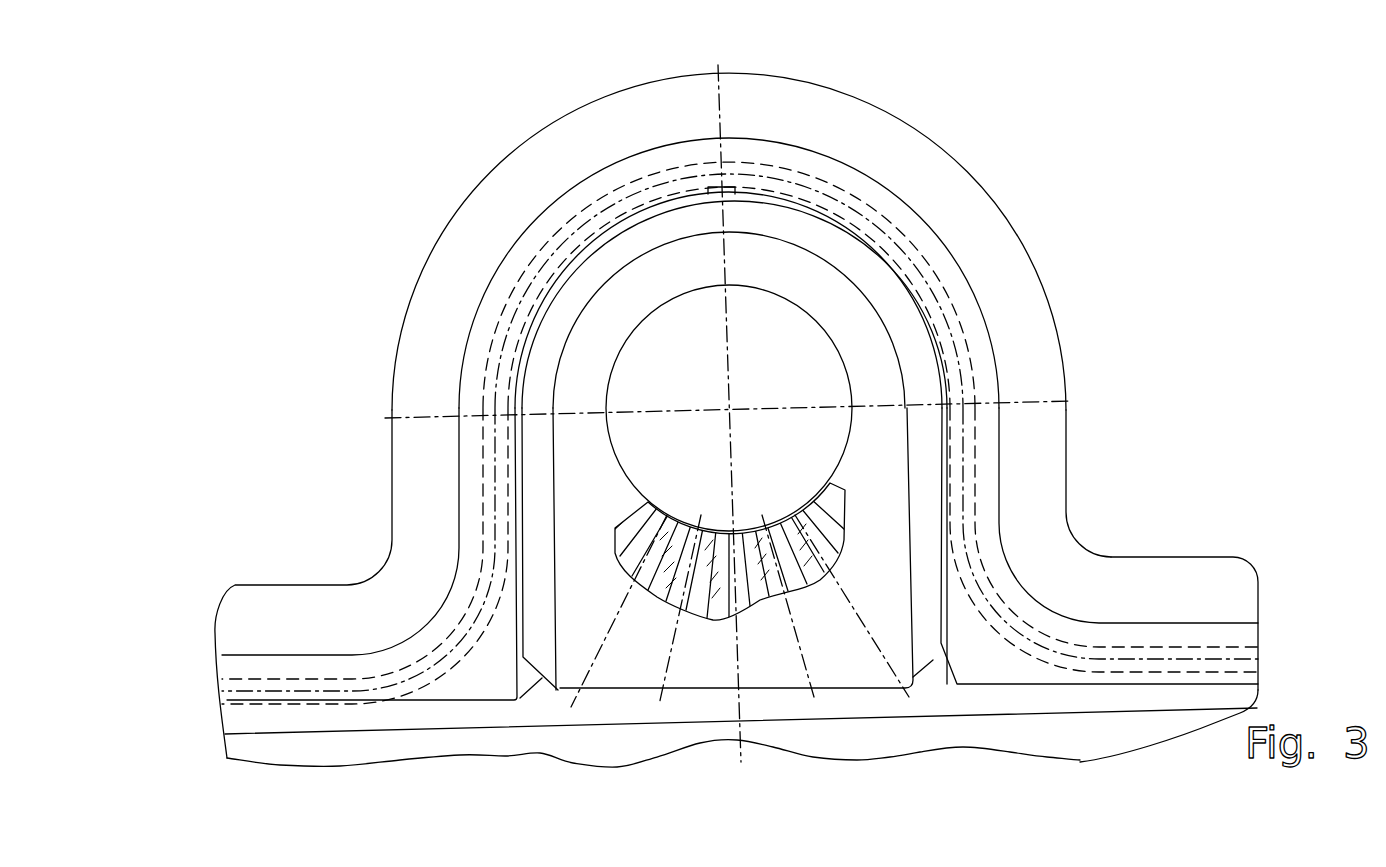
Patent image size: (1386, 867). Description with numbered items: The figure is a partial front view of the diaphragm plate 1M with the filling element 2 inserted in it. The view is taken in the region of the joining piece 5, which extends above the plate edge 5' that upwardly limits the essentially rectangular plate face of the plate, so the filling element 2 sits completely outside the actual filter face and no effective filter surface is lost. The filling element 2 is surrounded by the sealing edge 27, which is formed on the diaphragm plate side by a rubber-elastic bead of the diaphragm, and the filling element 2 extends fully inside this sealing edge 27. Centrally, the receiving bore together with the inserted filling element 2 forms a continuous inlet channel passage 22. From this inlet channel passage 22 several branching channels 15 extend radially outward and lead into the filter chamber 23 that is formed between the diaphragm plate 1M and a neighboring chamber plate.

The diaphragm plate 1M is at (1005, 250).
The filling element 2 is at (937, 358).
The joining piece 5 is at (1194, 496).
The plate edge 5' is at (1205, 582).
The branching channels 15 is at (643, 550).
The inlet channel passage 22 is at (665, 380).
The filter chamber 23 is at (458, 745).
The sealing edge 27 is at (493, 222).